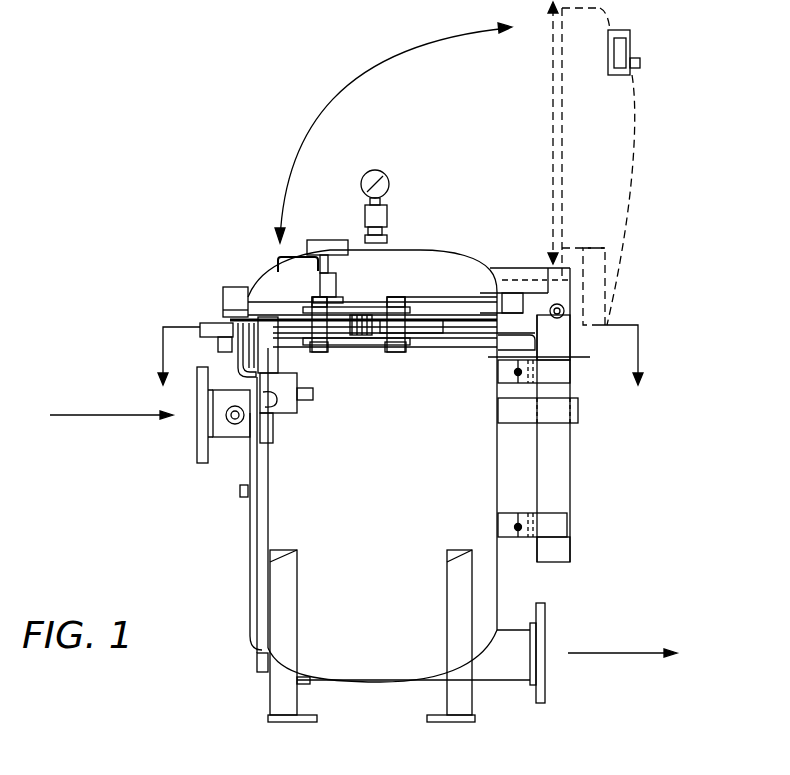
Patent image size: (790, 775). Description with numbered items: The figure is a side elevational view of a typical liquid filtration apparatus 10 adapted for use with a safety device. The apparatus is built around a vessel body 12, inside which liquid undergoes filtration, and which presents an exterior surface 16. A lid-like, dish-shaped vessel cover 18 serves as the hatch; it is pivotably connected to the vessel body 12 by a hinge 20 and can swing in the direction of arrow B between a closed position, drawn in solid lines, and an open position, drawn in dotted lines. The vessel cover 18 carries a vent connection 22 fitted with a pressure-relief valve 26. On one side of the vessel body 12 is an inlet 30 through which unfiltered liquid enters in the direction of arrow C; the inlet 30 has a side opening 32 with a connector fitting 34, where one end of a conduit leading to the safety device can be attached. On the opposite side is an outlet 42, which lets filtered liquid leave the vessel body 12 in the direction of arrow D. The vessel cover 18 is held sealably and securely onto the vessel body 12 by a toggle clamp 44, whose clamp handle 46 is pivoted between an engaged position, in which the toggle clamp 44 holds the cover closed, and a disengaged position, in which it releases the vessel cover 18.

The liquid filtration apparatus 10 is at (143, 176).
The vessel body 12 is at (477, 458).
The exterior surface 16 is at (366, 470).
The vessel cover 18 is at (268, 272).
The hinge 20 is at (568, 312).
The vent connection 22 is at (384, 238).
The pressure-relief valve 26 is at (370, 215).
The inlet 30 is at (217, 428).
The side opening 32 is at (244, 428).
The connector fitting 34 is at (232, 428).
The outlet 42 is at (520, 642).
The toggle clamp 44 is at (340, 326).
The clamp handle 46 is at (213, 325).